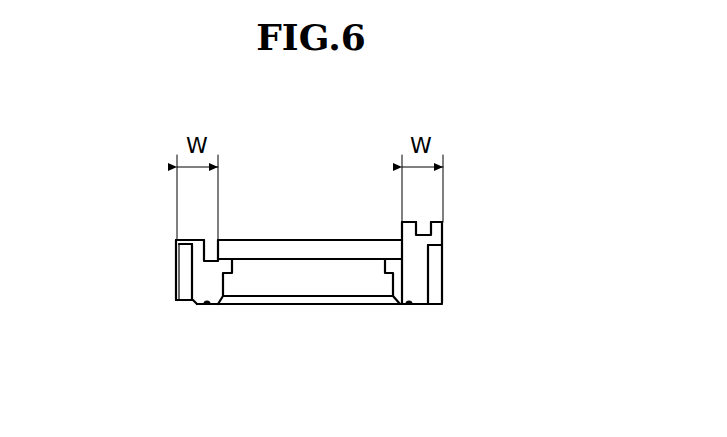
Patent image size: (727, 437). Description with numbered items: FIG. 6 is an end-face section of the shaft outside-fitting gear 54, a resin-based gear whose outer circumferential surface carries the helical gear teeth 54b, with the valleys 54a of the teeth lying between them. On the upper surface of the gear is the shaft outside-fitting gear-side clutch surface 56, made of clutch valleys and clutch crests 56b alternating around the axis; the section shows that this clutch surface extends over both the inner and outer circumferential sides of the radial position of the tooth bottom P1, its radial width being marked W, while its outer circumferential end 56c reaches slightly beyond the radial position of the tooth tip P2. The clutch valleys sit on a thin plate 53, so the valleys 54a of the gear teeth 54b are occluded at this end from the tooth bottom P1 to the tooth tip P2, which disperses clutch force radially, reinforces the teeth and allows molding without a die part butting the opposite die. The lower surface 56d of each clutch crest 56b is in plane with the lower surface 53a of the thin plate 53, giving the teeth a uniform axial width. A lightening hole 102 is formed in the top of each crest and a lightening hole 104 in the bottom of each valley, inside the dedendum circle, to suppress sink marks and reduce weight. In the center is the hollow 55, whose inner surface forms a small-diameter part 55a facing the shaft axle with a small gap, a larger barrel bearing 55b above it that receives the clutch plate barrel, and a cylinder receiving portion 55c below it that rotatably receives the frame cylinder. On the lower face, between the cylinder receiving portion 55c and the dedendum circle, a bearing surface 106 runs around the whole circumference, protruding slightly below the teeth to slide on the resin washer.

The shaft outside-fitting gear 54 is at (556, 144).
The thin plate 53 is at (150, 250).
The lower surface of the thin plate 53a is at (176, 252).
The shaft outside-fitting gear-side clutch surface 56 is at (125, 267).
The clutch crests 56b is at (425, 222).
The outer circumferential end of the clutch surface 56c is at (178, 245).
The lower surface of the clutch crest 56d is at (443, 253).
The tooth bottom P1 is at (191, 281).
The tooth tip P2 is at (179, 268).
The lightening hole 104 is at (212, 250).
The lightening hole 102 is at (417, 232).
The hollow 55 is at (299, 255).
The small-diameter part 55a is at (296, 278).
The barrel bearing 55b is at (336, 248).
The cylinder receiving portion 55c is at (347, 291).
The valleys of the gear teeth 54a is at (443, 262).
The gear teeth 54b is at (447, 288).
The bearing surface 106 is at (413, 307).